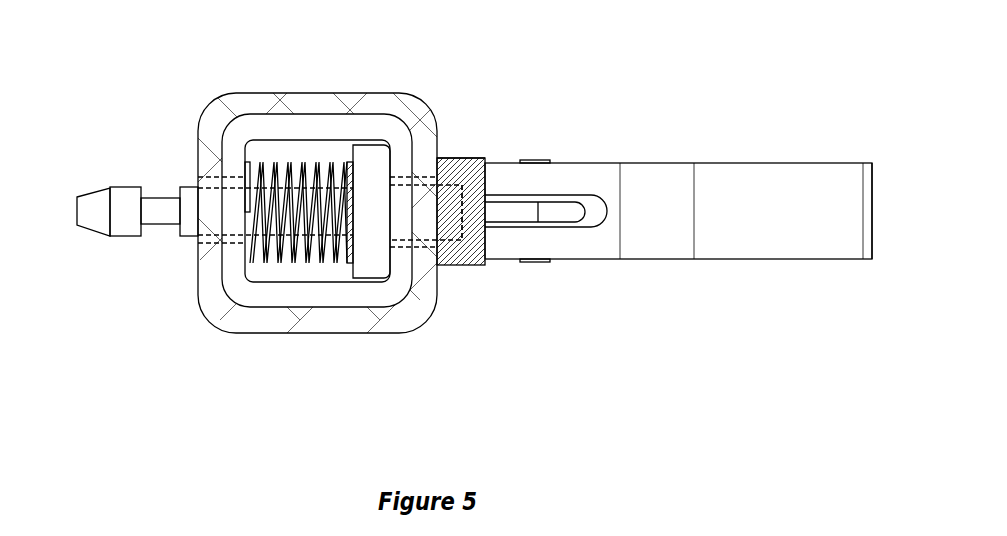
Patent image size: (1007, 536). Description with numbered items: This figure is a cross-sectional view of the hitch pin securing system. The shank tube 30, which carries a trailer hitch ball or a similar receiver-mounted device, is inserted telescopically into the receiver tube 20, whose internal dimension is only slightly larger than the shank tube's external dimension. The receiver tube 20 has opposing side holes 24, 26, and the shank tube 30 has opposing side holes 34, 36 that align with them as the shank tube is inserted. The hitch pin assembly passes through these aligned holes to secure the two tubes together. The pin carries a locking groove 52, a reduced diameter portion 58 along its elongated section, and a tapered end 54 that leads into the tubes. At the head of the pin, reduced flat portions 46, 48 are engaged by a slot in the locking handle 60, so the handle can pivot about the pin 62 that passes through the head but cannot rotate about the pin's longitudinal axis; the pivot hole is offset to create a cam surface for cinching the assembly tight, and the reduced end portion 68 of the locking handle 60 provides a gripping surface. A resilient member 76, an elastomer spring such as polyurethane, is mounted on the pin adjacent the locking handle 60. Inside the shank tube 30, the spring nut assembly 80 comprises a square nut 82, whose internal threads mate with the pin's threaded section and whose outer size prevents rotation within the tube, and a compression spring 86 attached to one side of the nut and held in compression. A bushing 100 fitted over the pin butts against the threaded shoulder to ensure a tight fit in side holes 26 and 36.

The receiver tube 20 is at (222, 317).
The side hole 24 is at (195, 178).
The side hole 26 is at (438, 158).
The shank tube 30 is at (230, 143).
The side hole 34 is at (240, 237).
The side hole 36 is at (408, 175).
The reduced flat portion 46 is at (678, 184).
The reduced flat portion 48 is at (546, 263).
The locking groove 52 is at (165, 215).
The tapered end 54 is at (90, 228).
The reduced diameter portion 58 is at (278, 218).
The locking handle 60 is at (740, 133).
The pin 62 is at (542, 158).
The end portion 68 is at (818, 230).
The resilient member 76 is at (470, 267).
The spring nut assembly 80 is at (370, 238).
The square nut 82 is at (370, 167).
The compression spring 86 is at (302, 162).
The bushing 100 is at (197, 180).